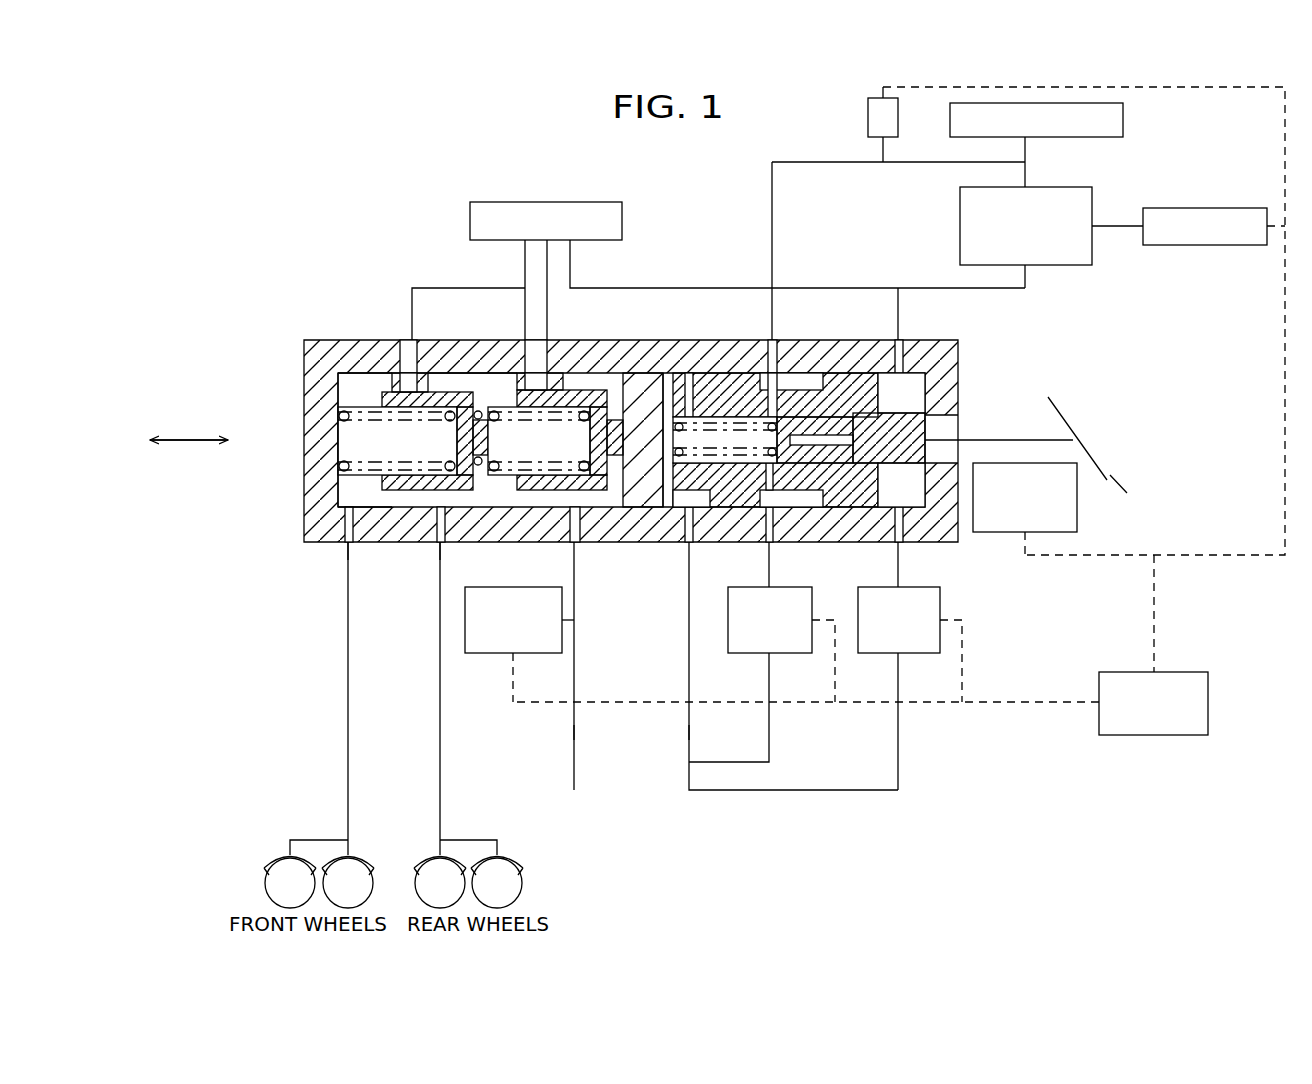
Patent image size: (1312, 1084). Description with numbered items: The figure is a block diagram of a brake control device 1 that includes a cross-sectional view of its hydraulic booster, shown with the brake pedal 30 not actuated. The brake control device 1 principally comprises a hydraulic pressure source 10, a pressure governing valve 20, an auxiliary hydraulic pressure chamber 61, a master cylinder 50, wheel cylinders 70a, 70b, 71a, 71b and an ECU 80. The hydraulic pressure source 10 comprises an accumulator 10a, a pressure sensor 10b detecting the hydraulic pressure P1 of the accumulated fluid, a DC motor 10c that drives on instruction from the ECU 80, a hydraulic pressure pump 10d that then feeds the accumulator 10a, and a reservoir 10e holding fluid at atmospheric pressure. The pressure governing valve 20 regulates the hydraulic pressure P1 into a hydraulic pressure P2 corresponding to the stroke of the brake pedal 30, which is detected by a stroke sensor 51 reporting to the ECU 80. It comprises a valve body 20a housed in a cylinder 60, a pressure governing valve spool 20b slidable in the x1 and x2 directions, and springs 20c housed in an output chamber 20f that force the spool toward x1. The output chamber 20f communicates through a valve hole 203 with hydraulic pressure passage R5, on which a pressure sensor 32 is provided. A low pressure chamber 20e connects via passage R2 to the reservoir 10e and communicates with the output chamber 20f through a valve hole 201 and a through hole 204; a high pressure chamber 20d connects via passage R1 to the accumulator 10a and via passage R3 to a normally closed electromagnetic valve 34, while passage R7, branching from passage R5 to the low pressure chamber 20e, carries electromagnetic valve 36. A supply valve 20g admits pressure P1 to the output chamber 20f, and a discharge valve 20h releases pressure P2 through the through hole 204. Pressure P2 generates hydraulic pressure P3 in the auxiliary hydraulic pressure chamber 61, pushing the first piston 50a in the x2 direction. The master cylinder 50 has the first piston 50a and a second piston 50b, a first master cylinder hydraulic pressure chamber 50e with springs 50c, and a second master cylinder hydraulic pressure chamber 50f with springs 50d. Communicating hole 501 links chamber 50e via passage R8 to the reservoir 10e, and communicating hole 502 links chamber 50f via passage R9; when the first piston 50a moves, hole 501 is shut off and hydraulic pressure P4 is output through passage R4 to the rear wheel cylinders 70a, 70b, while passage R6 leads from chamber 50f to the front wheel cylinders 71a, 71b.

The brake control device 1 is at (400, 212).
The hydraulic pressure source 10 is at (1028, 321).
The accumulator 10a is at (1123, 122).
The pressure sensor 10b is at (868, 115).
The DC motor 10c is at (1200, 245).
The hydraulic pressure pump 10d is at (1053, 265).
The reservoir 10e is at (540, 202).
The pressure governing valve 20 is at (844, 368).
The valve body 20a is at (855, 542).
The pressure governing valve spool 20b is at (910, 430).
The springs 20c is at (693, 340).
The high pressure chamber 20d is at (822, 340).
The low pressure chamber 20e is at (915, 385).
The output chamber 20f is at (757, 340).
The supply valve 20g is at (808, 340).
The discharge valve 20h is at (900, 417).
The valve hole 201 is at (872, 340).
The valve hole 203 is at (665, 542).
The through hole 204 is at (808, 542).
The brake pedal 30 is at (1105, 440).
The pressure sensor 32 is at (527, 655).
The electromagnetic valve 34 is at (790, 655).
The electromagnetic valve 36 is at (918, 655).
The master cylinder 50 is at (392, 475).
The first piston 50a is at (612, 340).
The second piston 50b is at (415, 542).
The springs 50c is at (463, 340).
The springs 50d is at (300, 385).
The first master cylinder hydraulic pressure chamber 50e is at (520, 545).
The second master cylinder hydraulic pressure chamber 50f is at (345, 480).
The communicating hole 501 is at (532, 340).
The communicating hole 502 is at (398, 340).
The stroke sensor 51 is at (1077, 512).
The cylinder 60 is at (350, 340).
The auxiliary hydraulic pressure chamber 61 is at (580, 340).
The wheel cylinder 70a is at (430, 852).
The wheel cylinder 70b is at (508, 852).
The wheel cylinder 71a is at (280, 852).
The wheel cylinder 71b is at (355, 852).
The ECU 80 is at (1178, 672).
The hydraulic pressure P1 is at (784, 251).
The hydraulic pressure P2 is at (793, 666).
The hydraulic pressure P3 is at (589, 666).
The hydraulic pressure P4 is at (411, 556).
The hydraulic pressure passage R1 is at (905, 162).
The hydraulic pressure passage R2 is at (952, 292).
The hydraulic pressure passage R3 is at (769, 725).
The hydraulic pressure passage R4 is at (440, 772).
The hydraulic pressure passage R5 is at (574, 725).
The hydraulic pressure passage R6 is at (348, 750).
The hydraulic pressure passage R7 is at (898, 725).
The hydraulic pressure passage R8 is at (548, 290).
The hydraulic pressure passage R9 is at (520, 280).
The x1 direction x1 is at (204, 442).
The x2 direction x2 is at (172, 442).